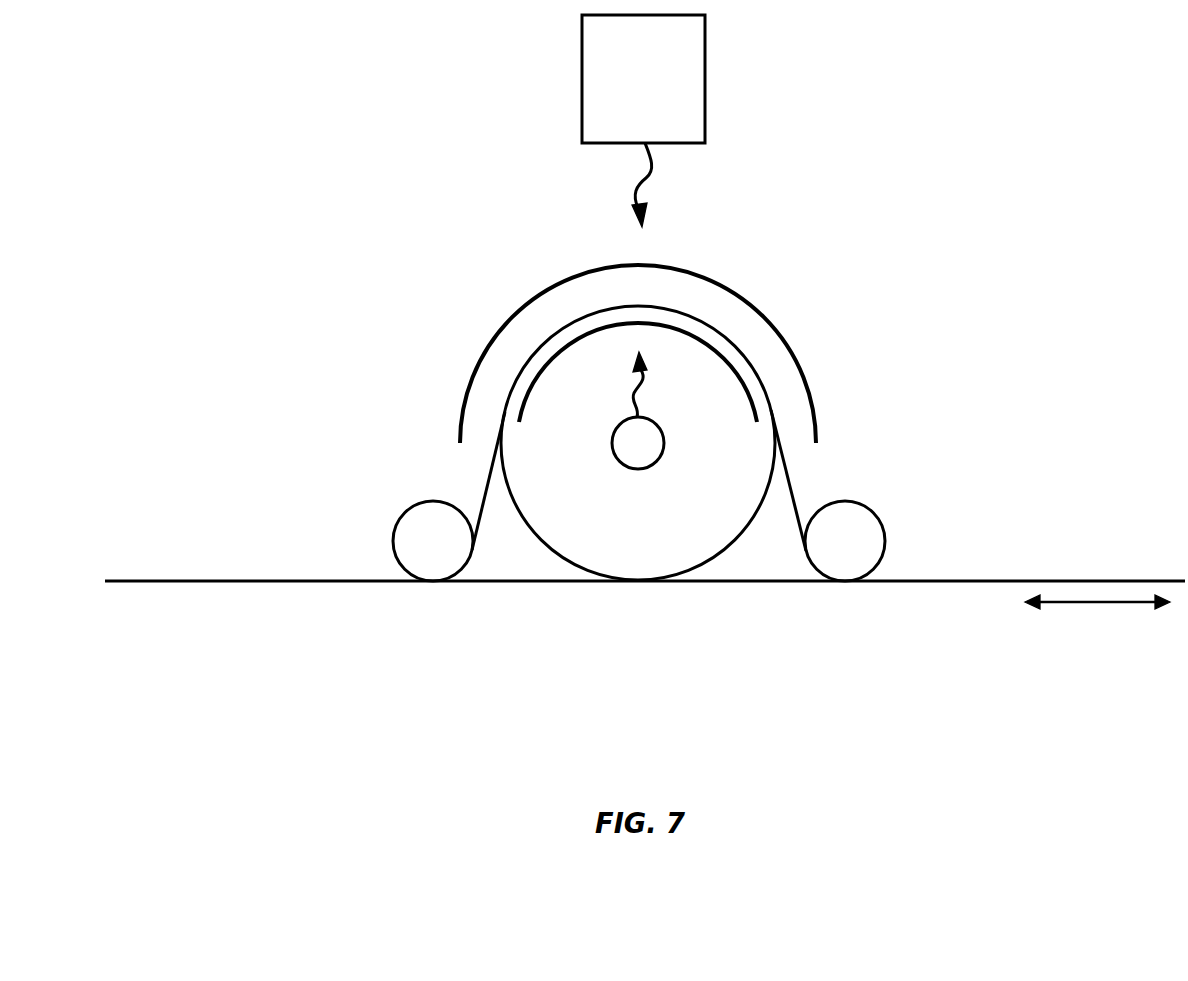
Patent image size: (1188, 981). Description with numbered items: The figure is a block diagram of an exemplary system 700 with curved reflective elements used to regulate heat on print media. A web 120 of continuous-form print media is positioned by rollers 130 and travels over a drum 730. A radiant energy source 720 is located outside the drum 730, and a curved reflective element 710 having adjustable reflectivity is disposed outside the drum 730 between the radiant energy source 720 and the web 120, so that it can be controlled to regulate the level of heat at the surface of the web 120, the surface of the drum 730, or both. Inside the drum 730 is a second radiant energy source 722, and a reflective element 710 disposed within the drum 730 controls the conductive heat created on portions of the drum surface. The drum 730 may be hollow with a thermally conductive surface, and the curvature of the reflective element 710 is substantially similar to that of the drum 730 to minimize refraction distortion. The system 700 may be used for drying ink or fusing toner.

The system 700 is at (328, 150).
The radiant energy source 720 is at (662, 132).
The curved reflective element 710 is at (530, 385).
The drum 730 is at (657, 549).
The radiant energy source 722 is at (653, 447).
The roller 130 is at (905, 480).
The web 120 is at (198, 581).